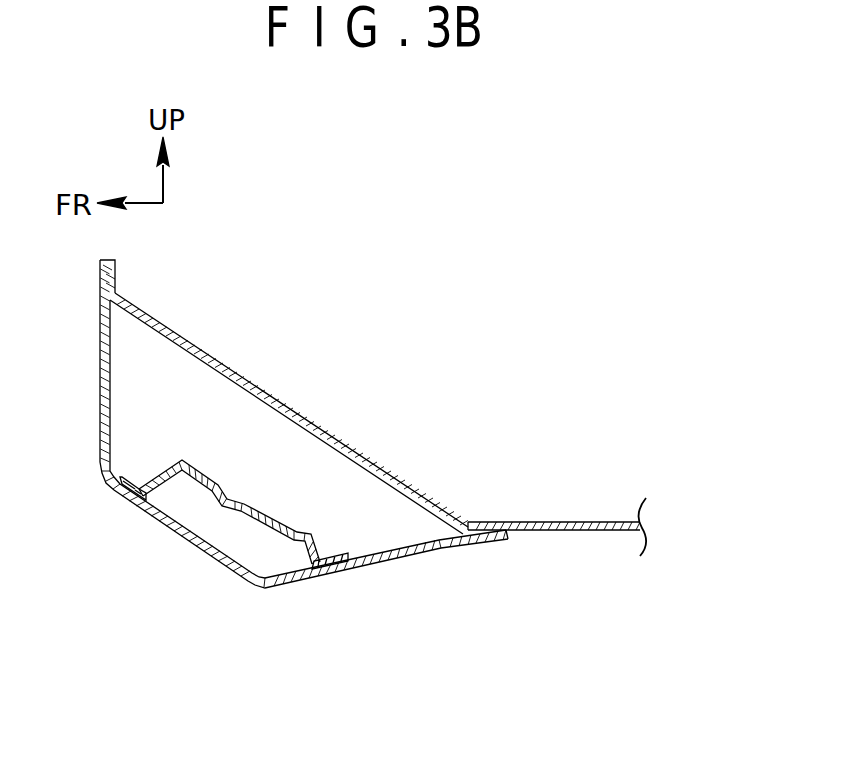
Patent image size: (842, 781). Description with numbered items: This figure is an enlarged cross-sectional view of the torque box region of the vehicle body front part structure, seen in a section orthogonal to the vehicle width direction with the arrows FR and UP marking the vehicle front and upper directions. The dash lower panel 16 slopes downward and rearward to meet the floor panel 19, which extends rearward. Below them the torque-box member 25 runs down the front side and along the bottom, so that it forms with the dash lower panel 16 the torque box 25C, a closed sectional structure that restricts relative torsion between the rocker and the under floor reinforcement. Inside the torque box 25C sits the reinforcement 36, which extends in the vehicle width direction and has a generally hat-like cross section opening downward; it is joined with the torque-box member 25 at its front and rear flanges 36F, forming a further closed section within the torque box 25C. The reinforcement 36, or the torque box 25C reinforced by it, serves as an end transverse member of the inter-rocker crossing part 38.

The dash lower panel 16 is at (252, 383).
The floor panel 19 is at (568, 522).
The torque-box member 25 is at (179, 536).
The torque box 25C is at (370, 577).
The inter-rocker crossing part 38 is at (381, 559).
The reinforcement 36 is at (280, 517).
The flange 36F is at (140, 483).